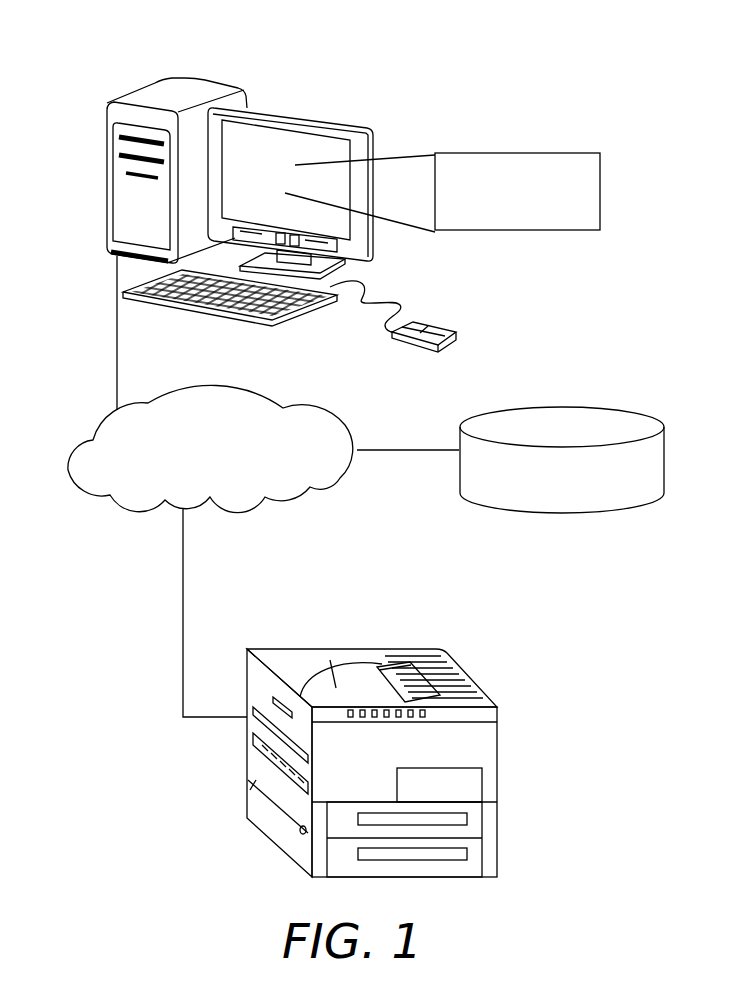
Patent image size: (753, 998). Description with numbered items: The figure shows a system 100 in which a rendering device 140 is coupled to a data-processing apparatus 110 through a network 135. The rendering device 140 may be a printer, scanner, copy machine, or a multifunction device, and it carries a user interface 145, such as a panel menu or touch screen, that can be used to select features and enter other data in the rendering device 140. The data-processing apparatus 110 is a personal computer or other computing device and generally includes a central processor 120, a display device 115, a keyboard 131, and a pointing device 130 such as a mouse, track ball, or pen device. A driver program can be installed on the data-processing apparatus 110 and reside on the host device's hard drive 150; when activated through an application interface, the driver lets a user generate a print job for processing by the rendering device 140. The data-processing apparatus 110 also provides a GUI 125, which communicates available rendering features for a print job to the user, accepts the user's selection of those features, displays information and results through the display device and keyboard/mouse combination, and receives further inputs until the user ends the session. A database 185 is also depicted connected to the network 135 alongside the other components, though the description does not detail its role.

The system 100 is at (464, 52).
The data-processing apparatus 110 is at (313, 148).
The display device 115 is at (297, 112).
The central processor 120 is at (107, 255).
The GUI 125 is at (537, 153).
The pointing device 130 is at (433, 323).
The keyboard 131 is at (194, 306).
The network 135 is at (250, 391).
The rendering device 140 is at (385, 650).
The user interface 145 is at (432, 677).
The hard drive 150 is at (147, 92).
The database 185 is at (603, 406).